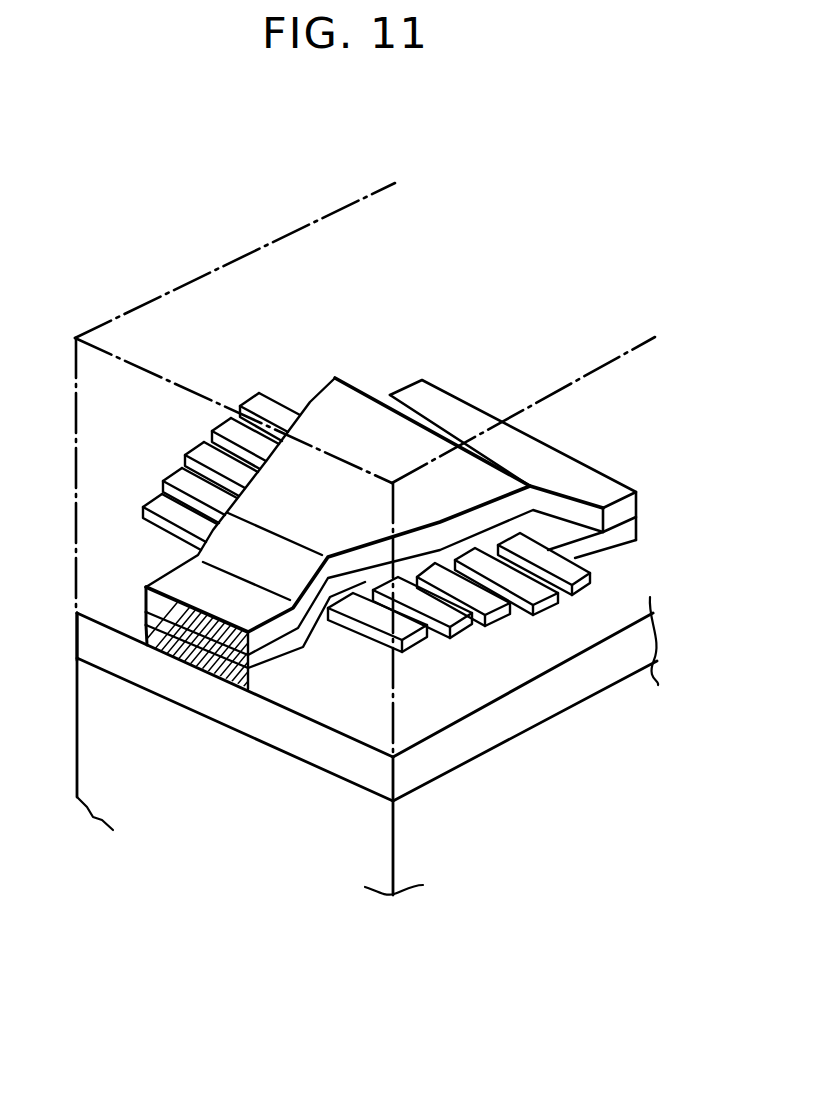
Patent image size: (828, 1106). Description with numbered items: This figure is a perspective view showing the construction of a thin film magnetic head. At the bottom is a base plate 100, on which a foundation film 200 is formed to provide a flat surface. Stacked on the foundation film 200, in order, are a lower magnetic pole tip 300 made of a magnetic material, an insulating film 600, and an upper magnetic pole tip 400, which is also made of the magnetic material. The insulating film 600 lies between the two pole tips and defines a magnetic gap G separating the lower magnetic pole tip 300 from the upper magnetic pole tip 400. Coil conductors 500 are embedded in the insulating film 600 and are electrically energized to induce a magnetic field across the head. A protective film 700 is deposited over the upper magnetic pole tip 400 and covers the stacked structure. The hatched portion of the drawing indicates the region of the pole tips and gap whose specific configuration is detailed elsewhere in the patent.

The base plate 100 is at (343, 840).
The foundation film 200 is at (467, 748).
The lower magnetic pole tip 300 is at (222, 668).
The magnetic gap G is at (190, 637).
The upper magnetic pole tip 400 is at (177, 610).
The coil conductors 500 is at (406, 654).
The insulating film 600 is at (518, 523).
The protective film 700 is at (217, 323).